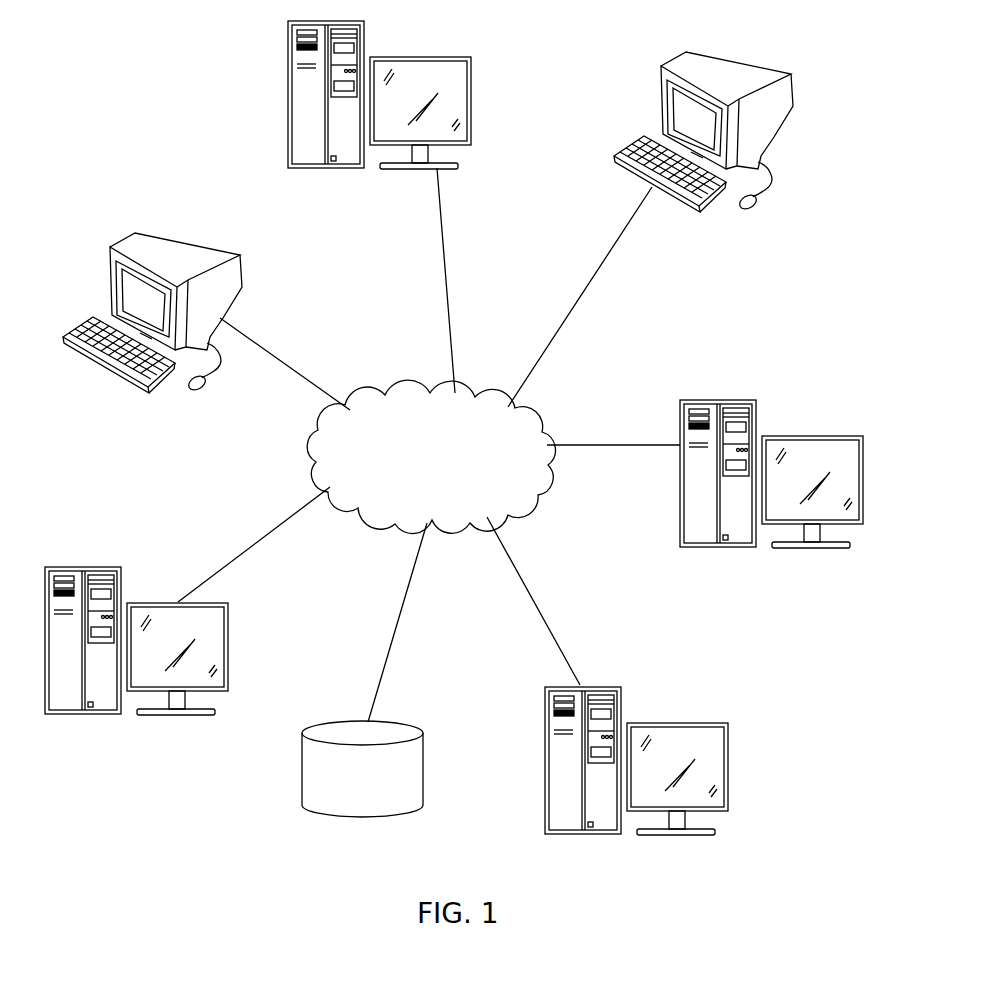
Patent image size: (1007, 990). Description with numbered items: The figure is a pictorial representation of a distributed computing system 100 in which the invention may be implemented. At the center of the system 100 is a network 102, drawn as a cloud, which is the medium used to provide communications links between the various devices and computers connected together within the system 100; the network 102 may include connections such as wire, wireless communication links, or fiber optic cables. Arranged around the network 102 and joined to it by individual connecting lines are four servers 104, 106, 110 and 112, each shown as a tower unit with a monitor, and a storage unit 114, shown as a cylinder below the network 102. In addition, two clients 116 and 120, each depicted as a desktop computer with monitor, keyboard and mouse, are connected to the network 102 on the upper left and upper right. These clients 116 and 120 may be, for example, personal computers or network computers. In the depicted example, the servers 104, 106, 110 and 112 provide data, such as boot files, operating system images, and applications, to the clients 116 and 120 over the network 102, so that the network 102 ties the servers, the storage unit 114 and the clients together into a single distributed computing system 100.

The distributed computing system 100 is at (150, 87).
The network 102 is at (419, 500).
The server 104 is at (366, 35).
The server 106 is at (732, 400).
The server 110 is at (620, 698).
The server 112 is at (97, 567).
The storage unit 114 is at (364, 813).
The client 116 is at (178, 233).
The client 120 is at (722, 52).